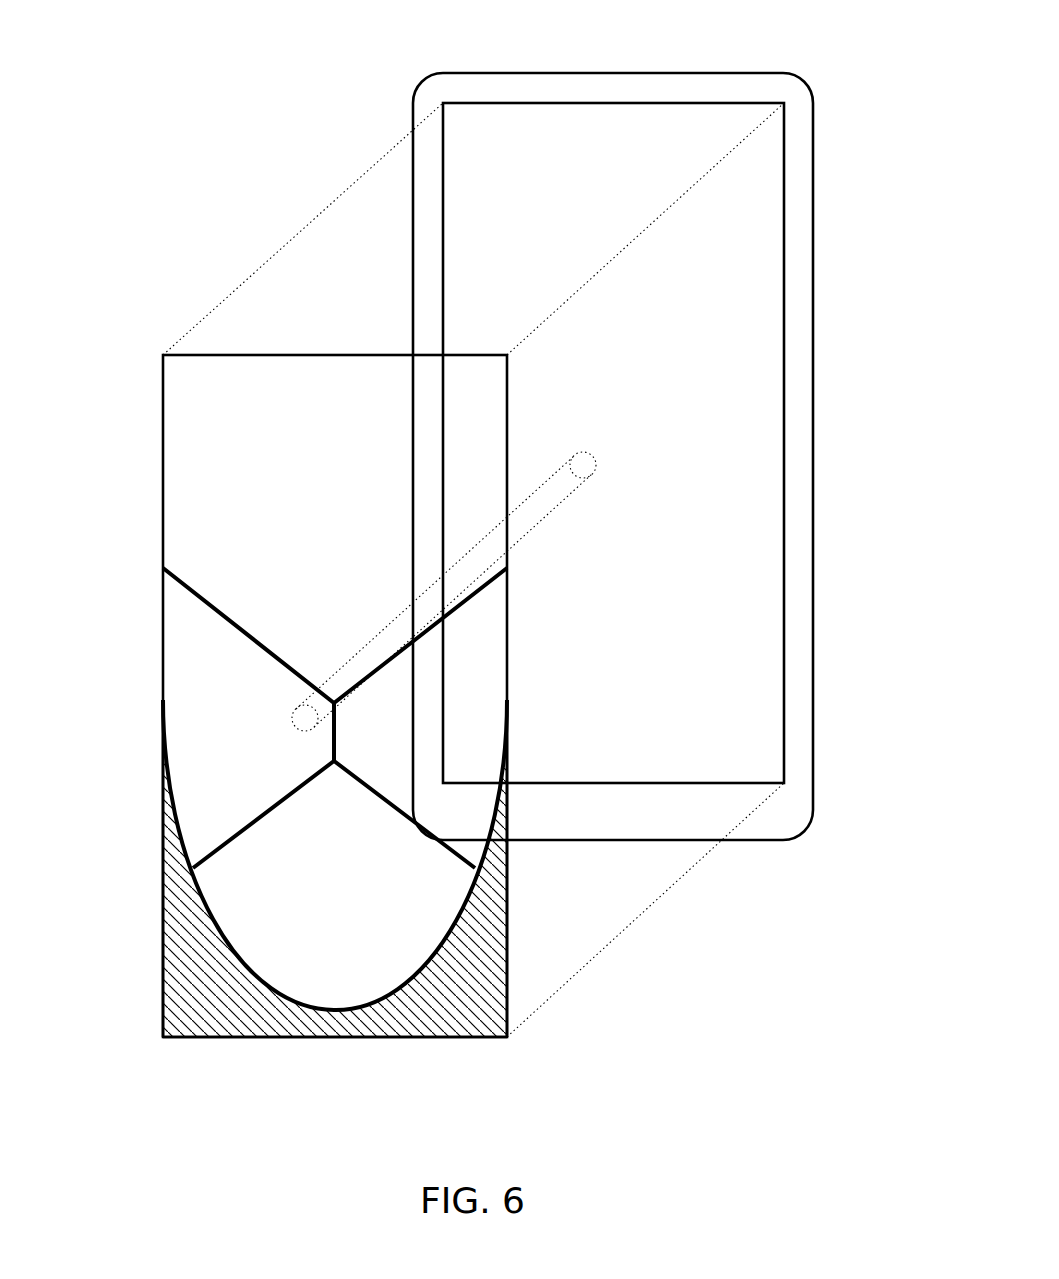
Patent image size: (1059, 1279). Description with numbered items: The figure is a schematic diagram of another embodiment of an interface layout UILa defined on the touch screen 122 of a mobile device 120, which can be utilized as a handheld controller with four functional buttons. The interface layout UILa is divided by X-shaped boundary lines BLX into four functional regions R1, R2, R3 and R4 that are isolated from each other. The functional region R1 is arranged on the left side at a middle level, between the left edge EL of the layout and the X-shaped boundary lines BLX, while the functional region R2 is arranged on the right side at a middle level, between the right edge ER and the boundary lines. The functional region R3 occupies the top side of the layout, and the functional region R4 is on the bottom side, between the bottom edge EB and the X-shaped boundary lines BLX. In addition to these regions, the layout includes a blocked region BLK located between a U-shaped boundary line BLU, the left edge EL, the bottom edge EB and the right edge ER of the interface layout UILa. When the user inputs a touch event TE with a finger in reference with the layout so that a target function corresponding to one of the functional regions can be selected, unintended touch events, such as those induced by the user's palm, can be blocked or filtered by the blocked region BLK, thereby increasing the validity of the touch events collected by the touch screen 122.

The mobile device 120 is at (740, 73).
The touch screen 122 is at (786, 133).
The interface layout UILa is at (163, 427).
The touch event TE is at (592, 455).
The functional region R1 is at (264, 739).
The functional region R2 is at (470, 742).
The functional region R3 is at (350, 502).
The functional region R4 is at (356, 916).
The X-shaped boundary lines BLX is at (272, 653).
The U-shaped boundary line BLU is at (333, 1006).
The blocked region BLK is at (240, 1022).
The left edge EL is at (160, 765).
The right edge ER is at (508, 807).
The bottom edge EB is at (341, 1037).